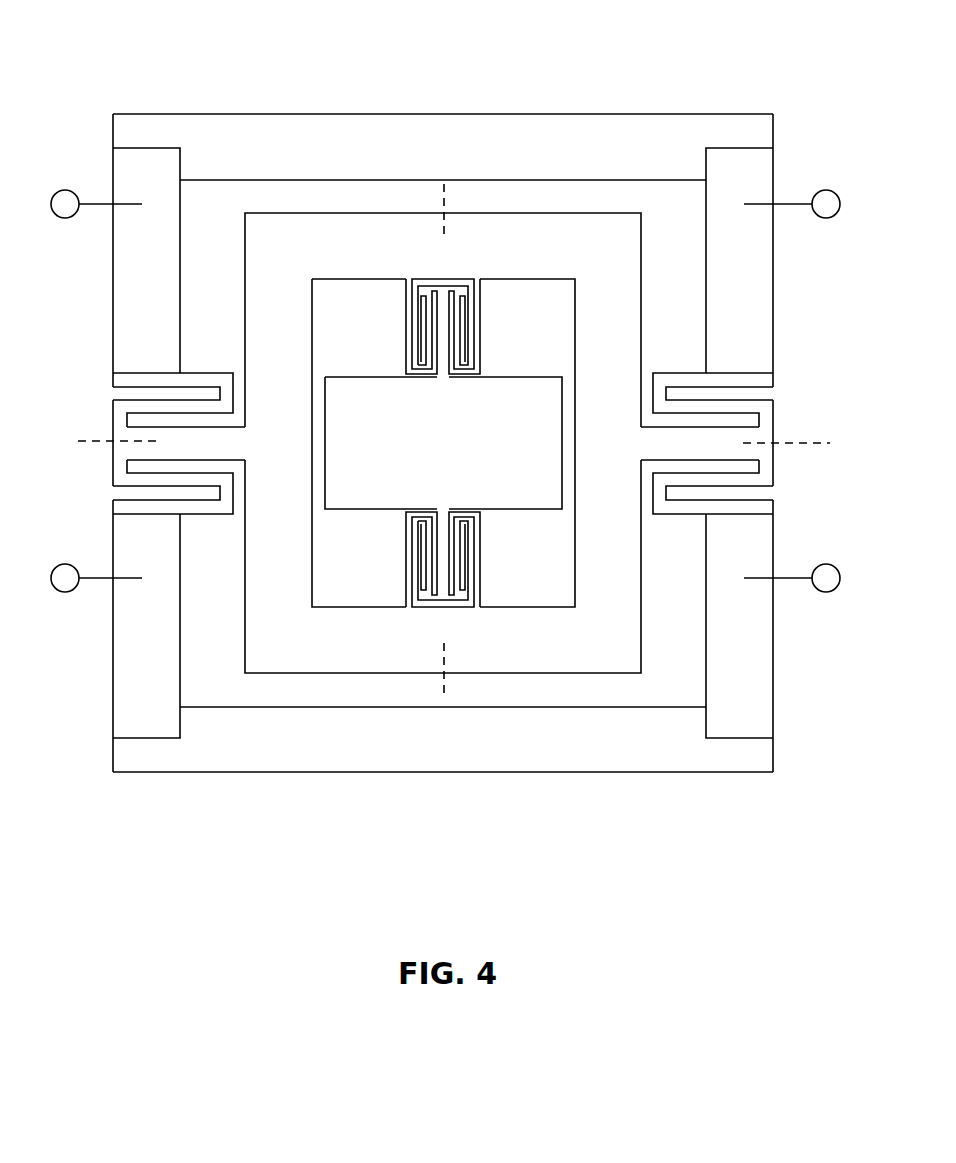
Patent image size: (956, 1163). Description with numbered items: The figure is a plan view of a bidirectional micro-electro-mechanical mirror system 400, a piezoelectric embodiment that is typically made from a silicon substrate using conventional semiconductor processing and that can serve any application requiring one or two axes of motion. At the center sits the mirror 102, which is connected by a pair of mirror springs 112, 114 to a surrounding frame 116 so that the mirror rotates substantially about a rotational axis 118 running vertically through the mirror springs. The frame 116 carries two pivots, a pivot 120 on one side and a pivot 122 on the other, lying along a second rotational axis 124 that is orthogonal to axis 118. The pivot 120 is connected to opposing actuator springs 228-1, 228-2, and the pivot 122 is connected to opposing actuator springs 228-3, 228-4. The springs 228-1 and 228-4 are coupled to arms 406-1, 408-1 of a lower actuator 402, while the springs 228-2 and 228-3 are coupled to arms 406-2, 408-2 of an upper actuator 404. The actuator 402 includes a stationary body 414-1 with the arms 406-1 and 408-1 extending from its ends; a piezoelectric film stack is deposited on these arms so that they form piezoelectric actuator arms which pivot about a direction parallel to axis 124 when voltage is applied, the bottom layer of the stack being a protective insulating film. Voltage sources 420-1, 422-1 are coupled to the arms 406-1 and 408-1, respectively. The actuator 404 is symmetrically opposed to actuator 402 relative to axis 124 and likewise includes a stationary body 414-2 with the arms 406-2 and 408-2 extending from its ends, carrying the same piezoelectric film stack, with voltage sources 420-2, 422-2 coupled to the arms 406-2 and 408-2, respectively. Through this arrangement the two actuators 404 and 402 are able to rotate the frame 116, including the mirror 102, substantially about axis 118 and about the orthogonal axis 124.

The MEMS mirror system 400 is at (92, 61).
The actuator 402 is at (375, 801).
The actuator 404 is at (412, 86).
The stationary body 414-2 is at (472, 162).
The stationary body 414-1 is at (472, 750).
The arm 406-2 is at (177, 311).
The arm 406-1 is at (177, 659).
The arm 408-2 is at (770, 311).
The arm 408-1 is at (770, 659).
The actuator spring 228-2 is at (212, 373).
The actuator spring 228-1 is at (207, 506).
The actuator spring 228-3 is at (687, 378).
The actuator spring 228-4 is at (679, 506).
The pivot 120 is at (211, 454).
The pivot 122 is at (715, 454).
The frame 116 is at (594, 248).
The rotational axis 118 is at (451, 196).
The rotational axis 124 is at (802, 446).
The mirror 102 is at (464, 450).
The mirror spring 114 is at (443, 331).
The mirror spring 112 is at (443, 553).
The voltage source 420-2 is at (63, 218).
The voltage source 420-1 is at (63, 592).
The voltage source 422-2 is at (823, 218).
The voltage source 422-1 is at (823, 592).